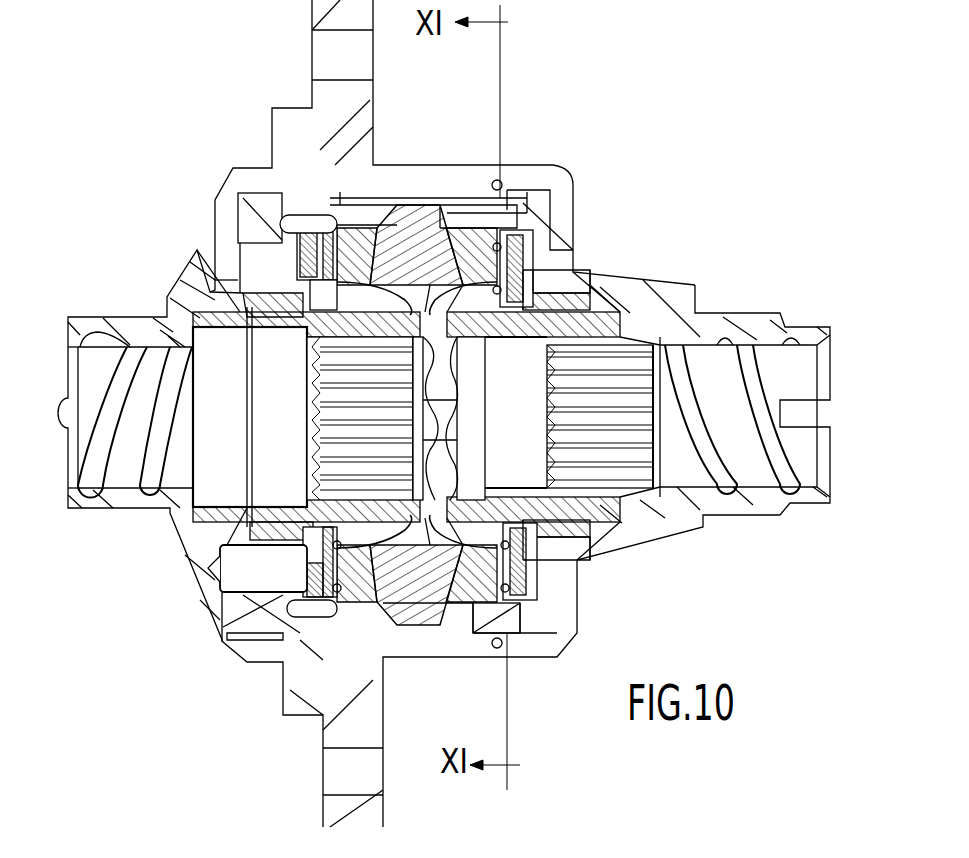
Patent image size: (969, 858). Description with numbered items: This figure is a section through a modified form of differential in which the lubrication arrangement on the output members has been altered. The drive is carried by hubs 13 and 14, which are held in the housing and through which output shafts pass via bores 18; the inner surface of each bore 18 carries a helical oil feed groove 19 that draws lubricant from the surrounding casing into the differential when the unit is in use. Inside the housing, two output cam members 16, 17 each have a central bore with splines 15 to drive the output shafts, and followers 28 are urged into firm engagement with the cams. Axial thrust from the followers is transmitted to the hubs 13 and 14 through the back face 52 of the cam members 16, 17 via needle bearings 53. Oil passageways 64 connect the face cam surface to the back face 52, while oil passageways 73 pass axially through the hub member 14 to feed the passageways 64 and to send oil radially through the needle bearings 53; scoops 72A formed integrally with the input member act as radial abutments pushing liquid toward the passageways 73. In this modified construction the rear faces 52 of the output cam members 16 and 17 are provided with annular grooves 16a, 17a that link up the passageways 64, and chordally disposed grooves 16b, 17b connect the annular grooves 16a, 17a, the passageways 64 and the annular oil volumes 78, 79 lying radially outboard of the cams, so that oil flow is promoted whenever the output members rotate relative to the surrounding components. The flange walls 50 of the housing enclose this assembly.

The hub 13 is at (175, 328).
The hub 14 is at (695, 525).
The splines 15 is at (330, 418).
The output cam member 16 is at (308, 500).
The annular groove 16a is at (258, 280).
The chordally disposed groove 16b is at (350, 232).
The output cam member 17 is at (640, 530).
The annular groove 17a is at (540, 285).
The chordally disposed groove 17b is at (540, 190).
The bore 18 is at (100, 338).
The helical oil feed groove 19 is at (115, 400).
The follower 28 is at (425, 205).
The housing flange wall 50 is at (225, 330).
The back face 52 is at (300, 236).
The needle bearing 53 is at (530, 250).
The oil passageway 64 is at (430, 322).
The scoop 72A is at (233, 615).
The oil passageway 73 is at (217, 575).
The annular oil volume 78 is at (305, 215).
The annular oil volume 79 is at (495, 192).